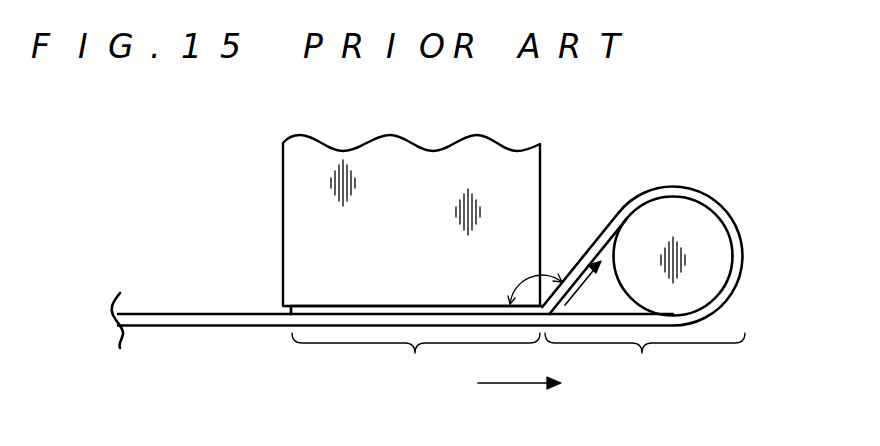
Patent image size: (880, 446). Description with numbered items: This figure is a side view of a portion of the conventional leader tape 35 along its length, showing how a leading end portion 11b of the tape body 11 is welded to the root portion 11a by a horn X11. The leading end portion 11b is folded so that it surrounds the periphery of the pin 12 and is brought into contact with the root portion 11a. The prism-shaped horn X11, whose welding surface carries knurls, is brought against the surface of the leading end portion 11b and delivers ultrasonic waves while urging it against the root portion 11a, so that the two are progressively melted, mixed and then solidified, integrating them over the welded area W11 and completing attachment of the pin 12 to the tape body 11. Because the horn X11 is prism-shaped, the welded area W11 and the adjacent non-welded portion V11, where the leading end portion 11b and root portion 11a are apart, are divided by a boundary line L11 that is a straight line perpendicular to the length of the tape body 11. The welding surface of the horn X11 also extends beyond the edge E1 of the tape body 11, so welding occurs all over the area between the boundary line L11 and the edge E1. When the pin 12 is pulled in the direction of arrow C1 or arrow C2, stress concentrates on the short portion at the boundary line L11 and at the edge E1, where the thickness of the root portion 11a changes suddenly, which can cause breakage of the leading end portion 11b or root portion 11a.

The leader tape 35 is at (680, 138).
The pin 12 is at (672, 208).
The tape body 11 is at (449, 266).
The root portion 11a is at (273, 320).
The leading end portion 11b is at (328, 311).
The horn X11 is at (300, 165).
The boundary line L11 is at (549, 280).
The edge E1 is at (292, 315).
The welded area W11 is at (416, 359).
The non-welded portion V11 is at (645, 358).
The arrow (pulling direction) C1 is at (589, 284).
The arrow (pulling direction) C2 is at (519, 398).